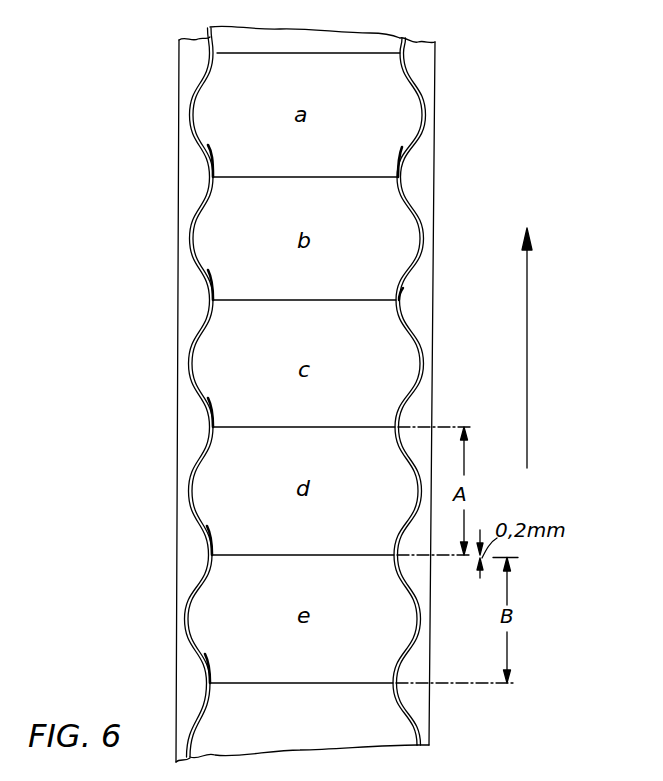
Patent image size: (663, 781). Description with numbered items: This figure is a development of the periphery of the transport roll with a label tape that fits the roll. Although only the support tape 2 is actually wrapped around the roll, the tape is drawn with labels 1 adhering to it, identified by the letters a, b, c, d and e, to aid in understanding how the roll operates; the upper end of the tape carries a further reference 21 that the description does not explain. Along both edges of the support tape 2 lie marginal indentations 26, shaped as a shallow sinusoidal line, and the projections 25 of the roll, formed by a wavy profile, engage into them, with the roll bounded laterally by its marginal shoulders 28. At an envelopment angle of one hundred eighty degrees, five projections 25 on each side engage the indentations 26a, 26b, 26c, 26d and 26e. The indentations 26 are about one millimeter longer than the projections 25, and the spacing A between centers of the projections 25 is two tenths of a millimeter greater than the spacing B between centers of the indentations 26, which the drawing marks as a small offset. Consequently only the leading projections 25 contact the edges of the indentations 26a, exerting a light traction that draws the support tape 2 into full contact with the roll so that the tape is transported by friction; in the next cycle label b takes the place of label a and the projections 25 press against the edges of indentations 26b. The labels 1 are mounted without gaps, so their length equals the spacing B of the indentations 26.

The label 1 is at (398, 86).
The support tape 2 is at (252, 36).
The end section 21 is at (308, 26).
The projection 25 is at (207, 176).
The marginal indentation 26 is at (405, 312).
The marginal indentation 26a is at (207, 143).
The marginal indentation 26b is at (212, 285).
The marginal indentation 26c is at (207, 398).
The marginal indentation 26d is at (213, 541).
The marginal indentation 26e is at (210, 666).
The marginal shoulder 28 is at (418, 115).